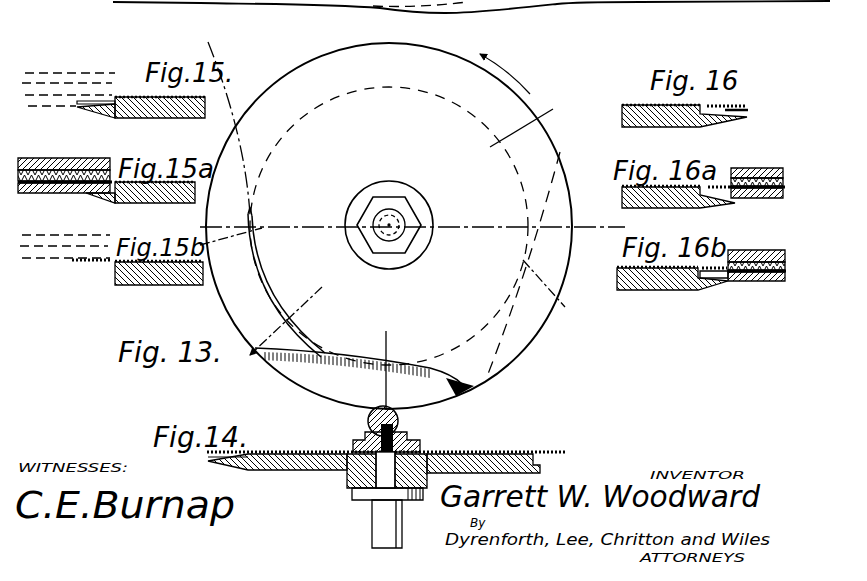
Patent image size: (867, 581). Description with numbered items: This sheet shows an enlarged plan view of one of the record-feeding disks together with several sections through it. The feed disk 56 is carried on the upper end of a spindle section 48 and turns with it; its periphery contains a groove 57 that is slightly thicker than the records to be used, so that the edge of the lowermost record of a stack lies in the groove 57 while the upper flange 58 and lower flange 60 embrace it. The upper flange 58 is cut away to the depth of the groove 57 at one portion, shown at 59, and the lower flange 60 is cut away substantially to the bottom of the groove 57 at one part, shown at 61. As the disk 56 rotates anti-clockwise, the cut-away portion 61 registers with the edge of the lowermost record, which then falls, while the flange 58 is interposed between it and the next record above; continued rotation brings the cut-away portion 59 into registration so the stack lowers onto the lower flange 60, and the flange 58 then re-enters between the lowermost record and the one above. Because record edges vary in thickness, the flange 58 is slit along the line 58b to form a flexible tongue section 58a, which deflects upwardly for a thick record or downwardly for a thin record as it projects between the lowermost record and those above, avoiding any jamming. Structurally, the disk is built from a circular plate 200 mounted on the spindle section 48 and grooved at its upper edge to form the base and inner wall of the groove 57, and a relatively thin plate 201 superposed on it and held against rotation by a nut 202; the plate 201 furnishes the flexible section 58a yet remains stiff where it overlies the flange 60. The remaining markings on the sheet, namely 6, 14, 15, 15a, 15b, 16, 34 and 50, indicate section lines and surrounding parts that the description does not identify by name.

In FIG. 14, the frame bar 6 is at (535, 467).
In FIG. 13, the carrier rod 14 is at (585, 212).
In FIG. 15A, the carrier rod 14 is at (200, 212).
In FIG. 13, the pivot stem 15 is at (422, 339).
In FIG. 14, the pivot stem 15 is at (399, 412).
In FIG. 13, the lip direction arrow 15a is at (258, 233).
In FIG. 13, the swing path 15b is at (499, 289).
In FIG. 13, the feed direction 16 is at (319, 308).
In FIG. 15, the web plate 34 is at (65, 75).
In FIG. 15A, the web plate 34 is at (42, 158).
In FIG. 15B, the web plate 34 is at (65, 246).
In FIG. 16A, the web plate 34 is at (775, 168).
In FIG. 16B, the web plate 34 is at (776, 290).
In FIG. 14, the spindle section 48 is at (403, 533).
In FIG. 13, the frame edge 50 is at (264, 0).
In FIG. 14, the feed disk 56 is at (422, 483).
In FIG. 14, the groove 57 is at (533, 450).
In FIG. 15, the groove 57 is at (105, 100).
In FIG. 16, the groove 57 is at (749, 111).
In FIG. 13, the upper flange 58 is at (425, 59).
In FIG. 14, the upper flange 58 is at (548, 451).
In FIG. 15, the upper flange 58 is at (141, 119).
In FIG. 15A, the upper flange 58 is at (112, 182).
In FIG. 15B, the upper flange 58 is at (95, 262).
In FIG. 16B, the upper flange 58 is at (714, 268).
In FIG. 13, the flexible section 58a is at (236, 304).
In FIG. 14, the flexible section 58a is at (207, 452).
In FIG. 16, the flexible section 58a is at (744, 105).
In FIG. 16A, the flexible section 58a is at (735, 204).
In FIG. 13, the slit line 58b is at (270, 294).
In FIG. 14, the cut-away portion of upper flange 59 is at (311, 432).
In FIG. 15, the cut-away portion of upper flange 59 is at (121, 97).
In FIG. 13, the lower flange 60 is at (314, 371).
In FIG. 14, the lower flange 60 is at (214, 487).
In FIG. 15, the lower flange 60 is at (98, 113).
In FIG. 15A, the lower flange 60 is at (98, 197).
In FIG. 16, the lower flange 60 is at (720, 137).
In FIG. 16A, the lower flange 60 is at (716, 216).
In FIG. 16B, the lower flange 60 is at (714, 290).
In FIG. 13, the cut-away portion of lower flange 61 is at (528, 265).
In FIG. 15B, the cut-away portion of lower flange 61 is at (106, 272).
In FIG. 14, the circular plate 200 is at (374, 482).
In FIG. 15, the circular plate 200 is at (178, 119).
In FIG. 15A, the circular plate 200 is at (162, 203).
In FIG. 15B, the circular plate 200 is at (178, 285).
In FIG. 16, the circular plate 200 is at (662, 127).
In FIG. 16A, the circular plate 200 is at (663, 208).
In FIG. 16B, the circular plate 200 is at (664, 290).
In FIG. 14, the thin plate 201 is at (276, 453).
In FIG. 15, the thin plate 201 is at (143, 97).
In FIG. 16, the thin plate 201 is at (640, 105).
In FIG. 16A, the thin plate 201 is at (640, 187).
In FIG. 16B, the thin plate 201 is at (632, 267).
In FIG. 14, the nut 202 is at (418, 440).